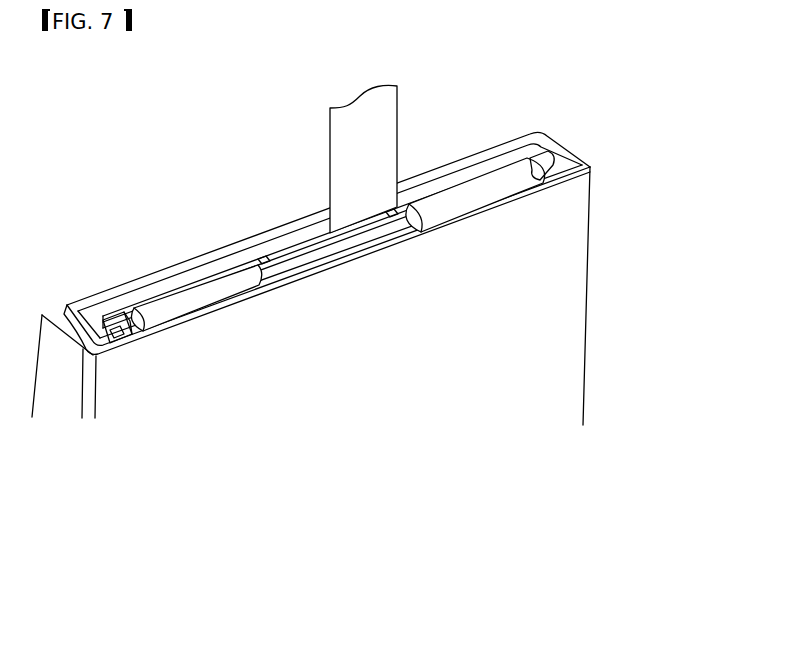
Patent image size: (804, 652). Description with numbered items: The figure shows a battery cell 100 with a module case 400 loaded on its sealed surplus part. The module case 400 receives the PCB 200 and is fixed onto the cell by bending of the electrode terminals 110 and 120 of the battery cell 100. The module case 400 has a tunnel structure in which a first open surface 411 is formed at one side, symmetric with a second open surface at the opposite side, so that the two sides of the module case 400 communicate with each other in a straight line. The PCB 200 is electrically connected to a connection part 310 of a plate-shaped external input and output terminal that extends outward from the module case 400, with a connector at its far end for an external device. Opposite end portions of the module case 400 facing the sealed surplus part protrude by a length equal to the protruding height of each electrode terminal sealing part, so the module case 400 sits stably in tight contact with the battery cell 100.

The battery cell 100 is at (486, 370).
The electrode terminal 110 is at (482, 197).
The electrode terminal 120 is at (178, 290).
The PCB 200 is at (128, 328).
The connection part 310 is at (380, 147).
The module case 400 is at (234, 232).
The first open surface 411 is at (292, 233).